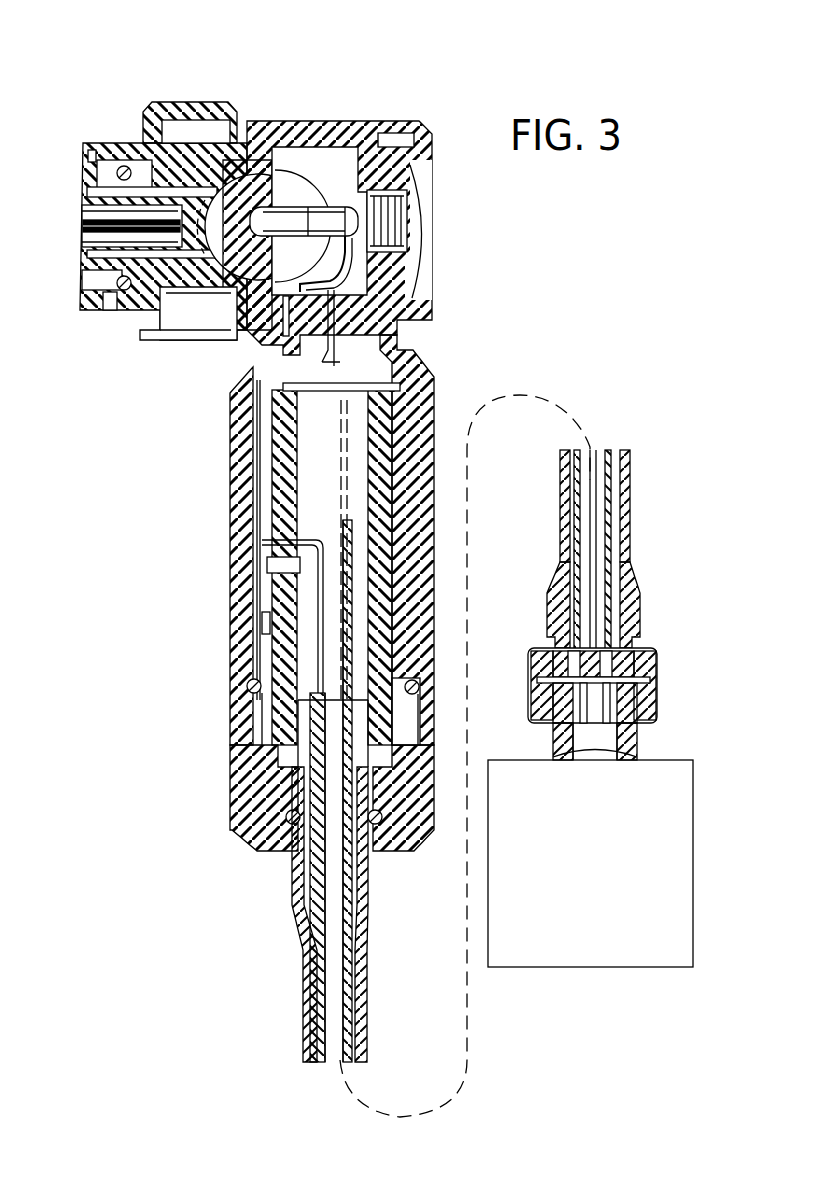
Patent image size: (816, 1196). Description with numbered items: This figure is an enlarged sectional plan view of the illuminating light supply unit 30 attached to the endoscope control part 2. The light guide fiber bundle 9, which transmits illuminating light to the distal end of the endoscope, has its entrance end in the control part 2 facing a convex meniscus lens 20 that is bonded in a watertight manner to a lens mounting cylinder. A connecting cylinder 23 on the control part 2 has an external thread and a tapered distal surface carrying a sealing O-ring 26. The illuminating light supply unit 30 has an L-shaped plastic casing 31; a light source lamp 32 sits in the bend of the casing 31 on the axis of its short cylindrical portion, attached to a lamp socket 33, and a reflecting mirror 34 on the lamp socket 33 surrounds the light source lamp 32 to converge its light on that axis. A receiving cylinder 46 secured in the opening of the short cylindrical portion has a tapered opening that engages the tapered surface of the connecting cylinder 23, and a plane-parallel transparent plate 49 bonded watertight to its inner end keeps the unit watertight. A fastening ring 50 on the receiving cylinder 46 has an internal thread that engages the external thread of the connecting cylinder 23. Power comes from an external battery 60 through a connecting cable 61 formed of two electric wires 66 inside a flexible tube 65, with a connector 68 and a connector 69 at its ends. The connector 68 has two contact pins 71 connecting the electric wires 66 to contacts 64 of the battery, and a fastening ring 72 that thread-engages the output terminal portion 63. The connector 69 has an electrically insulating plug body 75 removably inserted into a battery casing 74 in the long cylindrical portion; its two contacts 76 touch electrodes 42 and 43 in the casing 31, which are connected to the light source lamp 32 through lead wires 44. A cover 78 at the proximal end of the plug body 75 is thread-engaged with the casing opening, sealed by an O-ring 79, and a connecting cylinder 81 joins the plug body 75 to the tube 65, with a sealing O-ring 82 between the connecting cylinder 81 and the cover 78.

The control part 2 is at (78, 324).
The light guide fiber bundle 9 is at (84, 224).
The convex meniscus lens 20 is at (140, 305).
The connecting cylinder 23 is at (94, 155).
The sealing O-ring 26 is at (123, 166).
The illuminating light supply unit 30 is at (339, 84).
The casing 31 is at (430, 374).
The light source lamp 32 is at (309, 210).
The lamp socket 33 is at (402, 210).
The reflecting mirror 34 is at (292, 162).
The electrode 42 is at (262, 539).
The electrode 43 is at (336, 340).
The lead wires 44 is at (356, 262).
The receiving cylinder 46 is at (165, 155).
The plane-parallel transparent plate 49 is at (224, 347).
The fastening ring 50 is at (152, 117).
The external battery 60 is at (632, 964).
The connecting cable 61 is at (298, 1010).
The output terminal portion 63 is at (553, 691).
The contacts 64 is at (553, 721).
The flexible tube 65 is at (362, 1008).
The electric wires 66 is at (340, 672).
The connector 68 is at (660, 636).
The connector 69 is at (262, 438).
The contact pins 71 is at (637, 691).
The fastening ring 72 is at (535, 652).
The battery casing 74 is at (262, 566).
The plug body 75 is at (262, 484).
The contacts 76 is at (258, 387).
The cover 78 is at (240, 774).
The sealing O-ring 79 is at (248, 690).
The connecting cylinder 81 is at (300, 868).
The sealing O-ring 82 is at (290, 820).